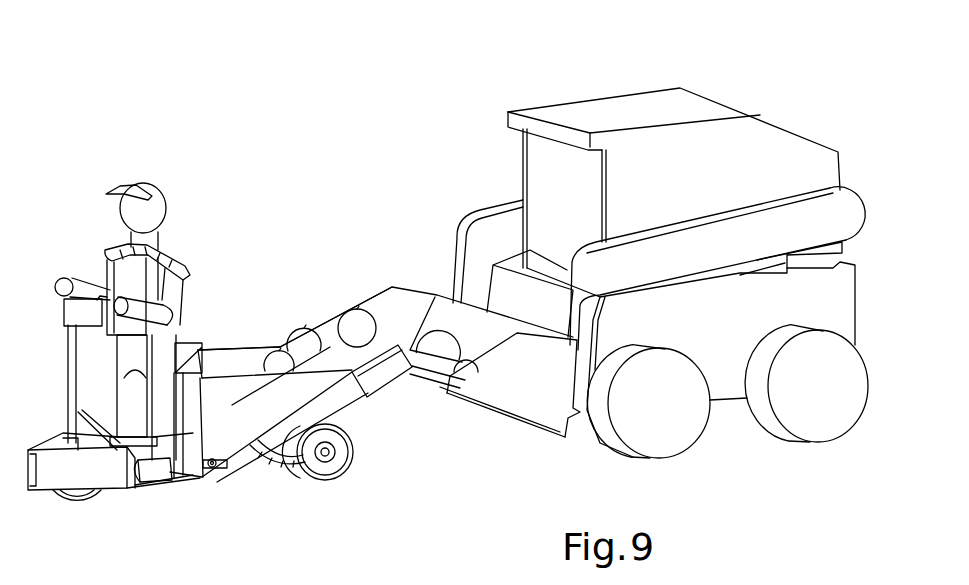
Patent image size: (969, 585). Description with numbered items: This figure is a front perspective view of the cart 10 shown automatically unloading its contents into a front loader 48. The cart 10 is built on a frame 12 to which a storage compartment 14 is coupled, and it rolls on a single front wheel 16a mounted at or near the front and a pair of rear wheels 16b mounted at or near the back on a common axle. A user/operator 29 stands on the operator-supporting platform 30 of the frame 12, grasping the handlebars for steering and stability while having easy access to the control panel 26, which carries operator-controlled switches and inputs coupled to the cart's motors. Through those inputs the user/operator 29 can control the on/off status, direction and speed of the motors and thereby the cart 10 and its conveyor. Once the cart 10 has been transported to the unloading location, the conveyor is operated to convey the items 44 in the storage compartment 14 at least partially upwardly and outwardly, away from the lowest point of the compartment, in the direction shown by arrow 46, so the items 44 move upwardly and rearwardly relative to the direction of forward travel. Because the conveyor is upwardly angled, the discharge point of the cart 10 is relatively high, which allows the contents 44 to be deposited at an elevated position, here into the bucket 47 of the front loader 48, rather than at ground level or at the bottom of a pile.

The cart 10 is at (278, 212).
The frame 12 is at (258, 463).
The storage compartment 14 is at (241, 350).
The front wheel 16a is at (80, 500).
The rear wheels 16b is at (332, 483).
The control panel 26 is at (78, 290).
The user/operator 29 is at (163, 250).
The platform 30 is at (197, 477).
The items 44 is at (296, 340).
The arrow 46 is at (287, 377).
The bucket 47 is at (517, 390).
The front loader 48 is at (747, 158).